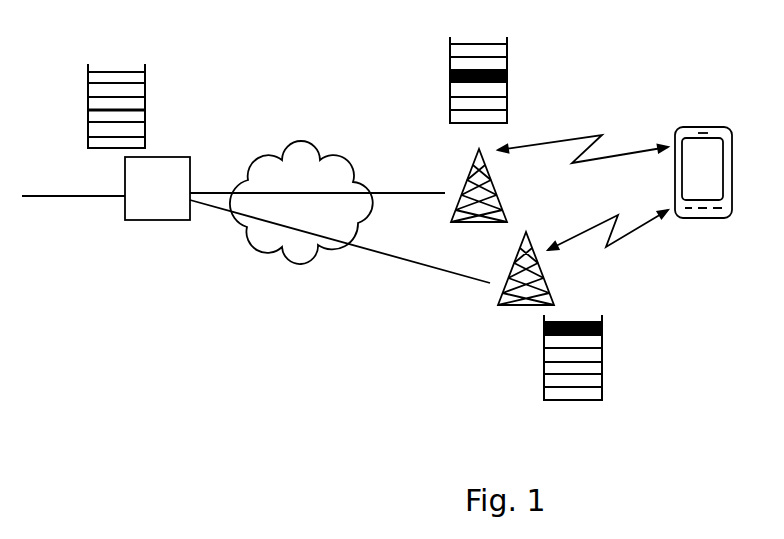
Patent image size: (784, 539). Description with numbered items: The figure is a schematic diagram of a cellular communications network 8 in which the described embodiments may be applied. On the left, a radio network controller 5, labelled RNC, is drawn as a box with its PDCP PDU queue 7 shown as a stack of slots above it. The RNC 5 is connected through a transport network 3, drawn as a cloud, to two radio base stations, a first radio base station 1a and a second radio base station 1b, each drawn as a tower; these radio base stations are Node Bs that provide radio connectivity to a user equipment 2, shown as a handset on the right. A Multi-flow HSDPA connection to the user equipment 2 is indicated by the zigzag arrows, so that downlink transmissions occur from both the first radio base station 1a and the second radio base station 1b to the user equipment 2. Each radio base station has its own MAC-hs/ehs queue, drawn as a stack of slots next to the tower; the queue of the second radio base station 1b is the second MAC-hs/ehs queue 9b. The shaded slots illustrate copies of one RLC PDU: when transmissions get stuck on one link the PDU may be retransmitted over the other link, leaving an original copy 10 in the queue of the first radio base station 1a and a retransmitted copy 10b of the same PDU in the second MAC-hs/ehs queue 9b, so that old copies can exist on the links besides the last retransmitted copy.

The first radio base station 1a is at (498, 198).
The second radio base station 1b is at (548, 290).
The user equipment 2 is at (732, 160).
The transport network 3 is at (295, 263).
The radio network controller 5 is at (126, 220).
The PDCP PDU queue 7 is at (145, 109).
The cellular communications network 8 is at (622, 77).
The second MAC-hs/ehs queue 9b is at (450, 100).
The data packet 10 is at (507, 77).
The retransmitted copy of the PDU 10b is at (602, 330).